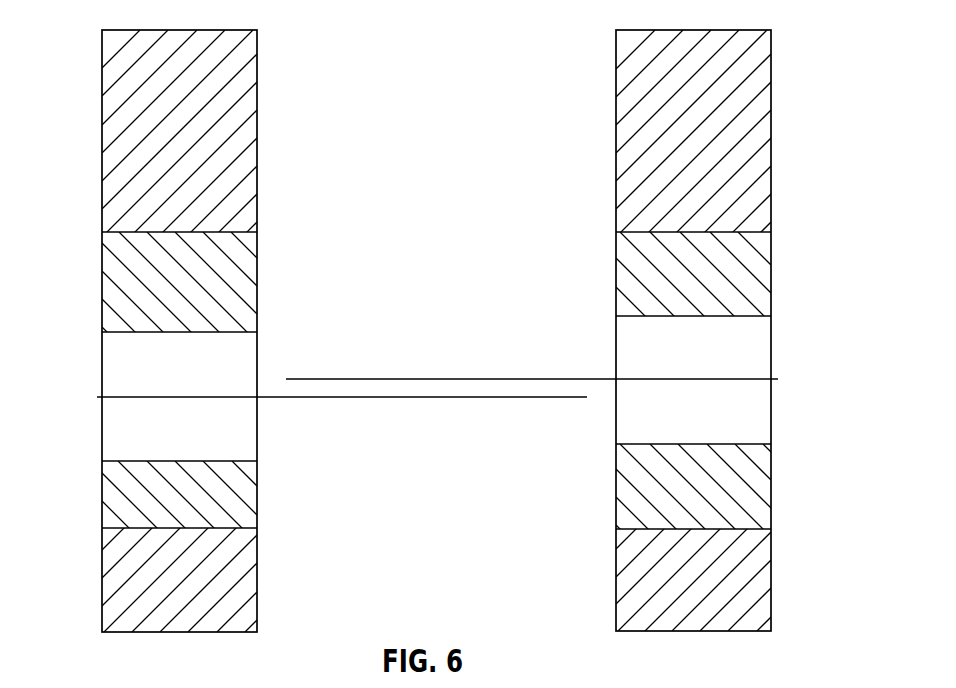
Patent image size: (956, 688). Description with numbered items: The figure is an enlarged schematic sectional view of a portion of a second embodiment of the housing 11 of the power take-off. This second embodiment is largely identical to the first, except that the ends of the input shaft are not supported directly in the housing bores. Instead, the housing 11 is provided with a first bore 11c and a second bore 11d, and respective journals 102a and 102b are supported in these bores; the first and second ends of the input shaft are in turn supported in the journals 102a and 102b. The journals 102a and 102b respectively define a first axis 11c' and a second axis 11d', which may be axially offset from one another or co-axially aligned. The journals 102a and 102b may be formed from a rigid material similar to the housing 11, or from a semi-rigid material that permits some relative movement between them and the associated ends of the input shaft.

The housing 11 is at (118, 100).
The first bore 11c is at (143, 294).
The second bore 11d is at (729, 269).
The first axis 11c' is at (342, 415).
The second axis 11d' is at (532, 361).
The first journal 102a is at (115, 493).
The second journal 102b is at (760, 500).